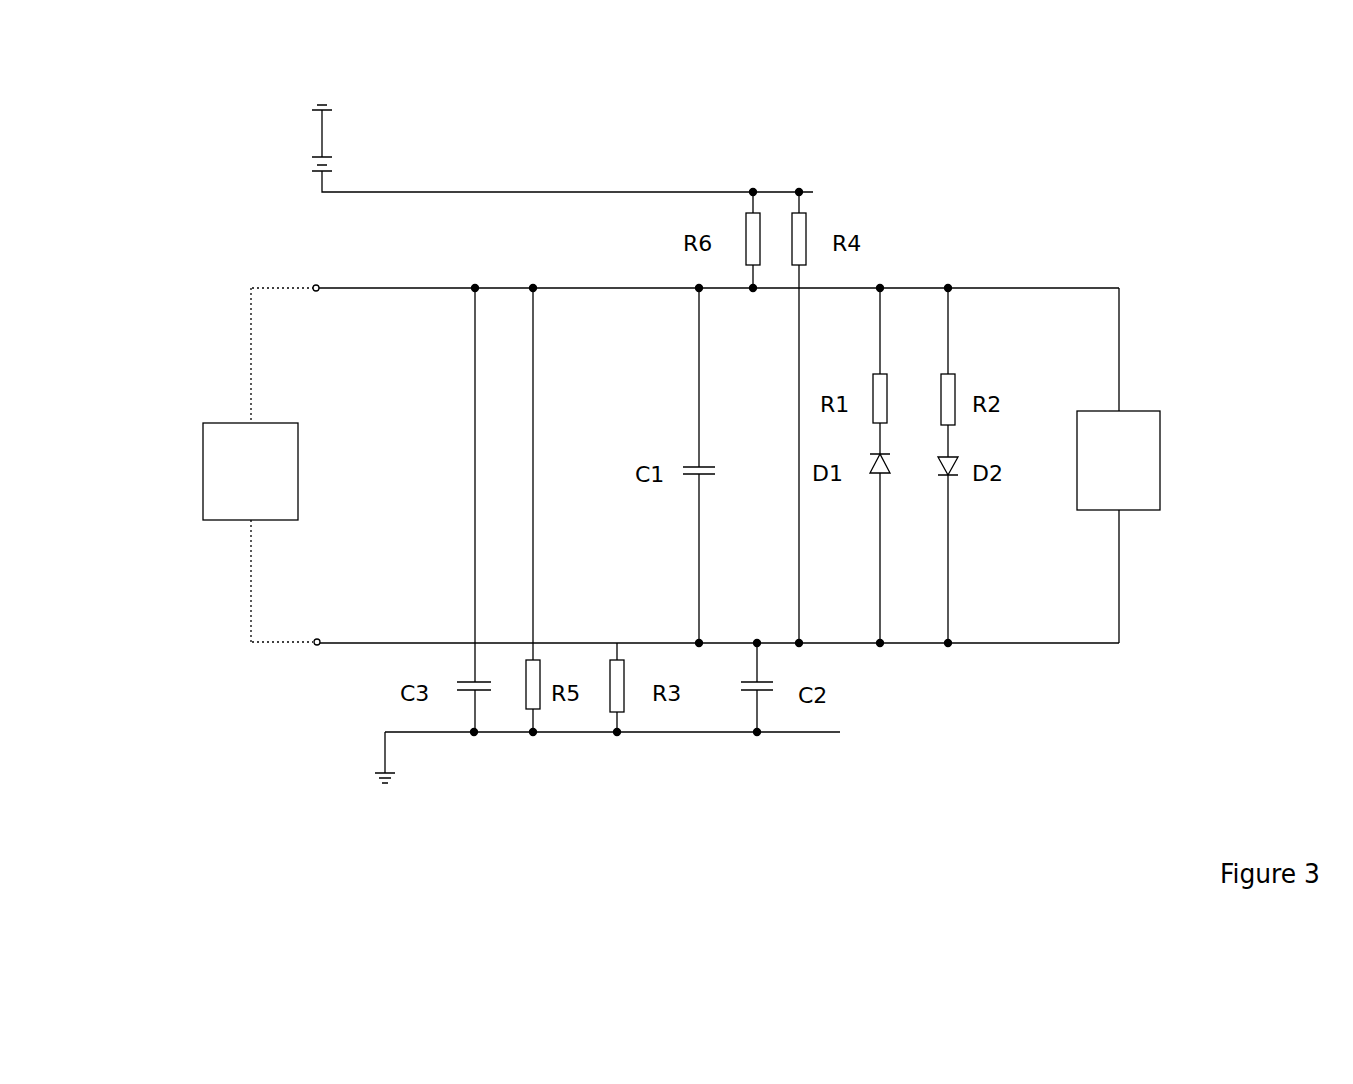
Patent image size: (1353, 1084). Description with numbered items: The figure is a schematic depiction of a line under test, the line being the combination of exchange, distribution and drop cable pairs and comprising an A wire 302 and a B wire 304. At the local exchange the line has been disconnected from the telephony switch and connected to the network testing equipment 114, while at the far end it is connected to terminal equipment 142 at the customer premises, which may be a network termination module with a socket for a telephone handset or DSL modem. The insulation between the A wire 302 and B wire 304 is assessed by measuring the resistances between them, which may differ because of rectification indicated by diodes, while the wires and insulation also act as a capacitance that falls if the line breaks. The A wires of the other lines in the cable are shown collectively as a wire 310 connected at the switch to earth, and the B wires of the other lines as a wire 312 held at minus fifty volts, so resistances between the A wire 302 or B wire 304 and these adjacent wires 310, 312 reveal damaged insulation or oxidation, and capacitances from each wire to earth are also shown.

The network testing equipment 114 is at (200, 473).
The terminal equipment 142 is at (1162, 463).
The A wire 302 is at (350, 637).
The B wire 304 is at (388, 286).
The wire (adjacent A wires) 310 is at (684, 735).
The wire (adjacent B wires) 312 is at (441, 190).